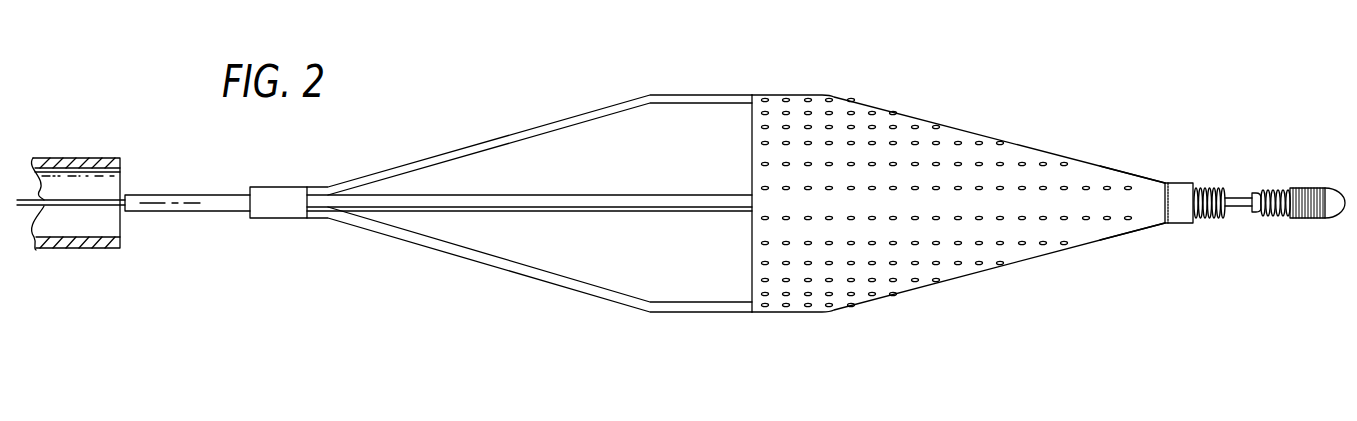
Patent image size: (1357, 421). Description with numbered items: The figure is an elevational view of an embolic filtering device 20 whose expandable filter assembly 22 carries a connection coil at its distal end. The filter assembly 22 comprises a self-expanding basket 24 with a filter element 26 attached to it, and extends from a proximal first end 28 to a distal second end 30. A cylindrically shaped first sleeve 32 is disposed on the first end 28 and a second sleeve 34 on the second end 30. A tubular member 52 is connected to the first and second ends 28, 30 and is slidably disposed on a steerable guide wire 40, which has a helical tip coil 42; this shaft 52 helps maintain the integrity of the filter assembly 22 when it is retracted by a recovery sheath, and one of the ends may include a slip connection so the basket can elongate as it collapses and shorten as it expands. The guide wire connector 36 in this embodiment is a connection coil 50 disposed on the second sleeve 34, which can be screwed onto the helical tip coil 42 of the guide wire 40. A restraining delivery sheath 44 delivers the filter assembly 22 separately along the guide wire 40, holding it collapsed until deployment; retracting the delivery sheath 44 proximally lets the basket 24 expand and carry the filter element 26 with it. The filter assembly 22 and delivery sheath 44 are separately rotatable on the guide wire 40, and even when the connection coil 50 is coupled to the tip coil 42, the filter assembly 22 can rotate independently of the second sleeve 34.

The embolic filtering device 20 is at (905, 82).
The expandable filter assembly 22 is at (588, 345).
The self-expanding basket 24 is at (546, 82).
The filter element 26 is at (927, 268).
The first end 28 is at (305, 188).
The second end 30 is at (1160, 180).
The first sleeve 32 is at (272, 213).
The second sleeve 34 is at (1177, 220).
The guide wire connector 36 is at (1210, 187).
The guide wire 40 is at (73, 207).
The helical tip coil 42 is at (1278, 215).
The delivery sheath 44 is at (80, 160).
The connection coil 50 is at (1200, 222).
The tubular member 52 is at (563, 203).